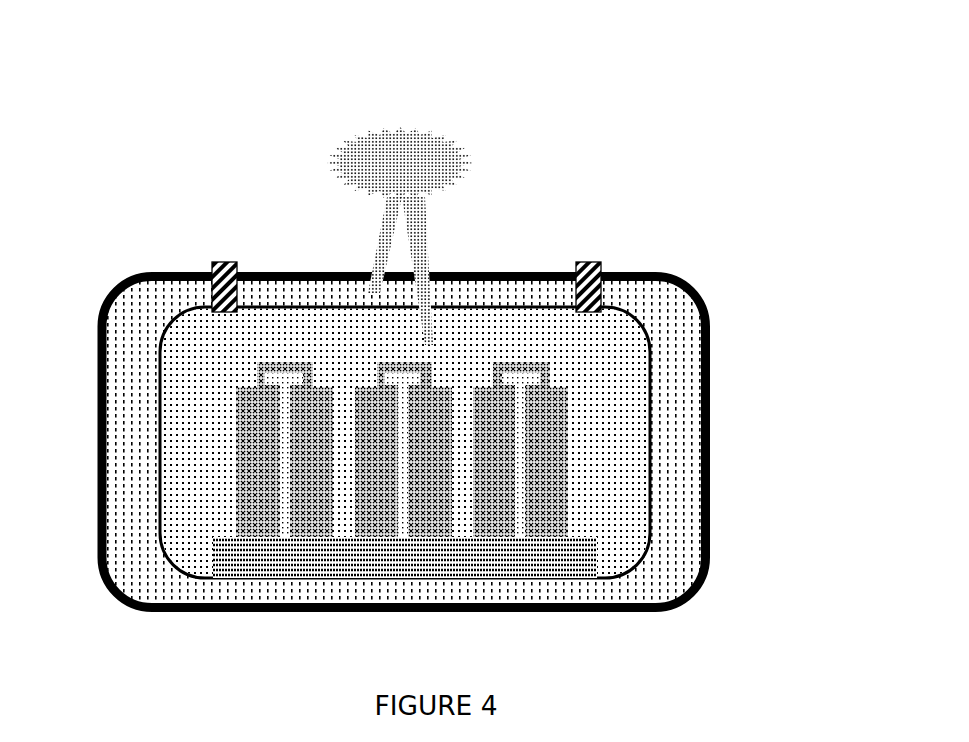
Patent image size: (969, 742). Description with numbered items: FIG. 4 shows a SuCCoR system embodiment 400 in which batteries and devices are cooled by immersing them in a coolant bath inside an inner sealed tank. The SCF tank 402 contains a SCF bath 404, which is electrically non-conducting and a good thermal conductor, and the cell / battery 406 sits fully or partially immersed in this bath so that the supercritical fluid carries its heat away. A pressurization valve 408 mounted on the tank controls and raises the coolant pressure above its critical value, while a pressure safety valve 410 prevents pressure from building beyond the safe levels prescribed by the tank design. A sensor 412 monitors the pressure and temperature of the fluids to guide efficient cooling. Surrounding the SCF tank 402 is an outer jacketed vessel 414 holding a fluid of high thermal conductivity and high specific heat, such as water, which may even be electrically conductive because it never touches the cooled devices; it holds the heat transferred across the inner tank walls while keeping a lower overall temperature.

The SuCCoR system embodiment 400 is at (107, 238).
The SCF tank 402 is at (514, 395).
The SCF bath 404 is at (585, 343).
The cell / battery 406 is at (557, 455).
The pressurization valve 408 is at (227, 253).
The pressure safety valve 410 is at (587, 253).
The sensor 412 is at (400, 236).
The outer jacketed vessel 414 is at (192, 616).